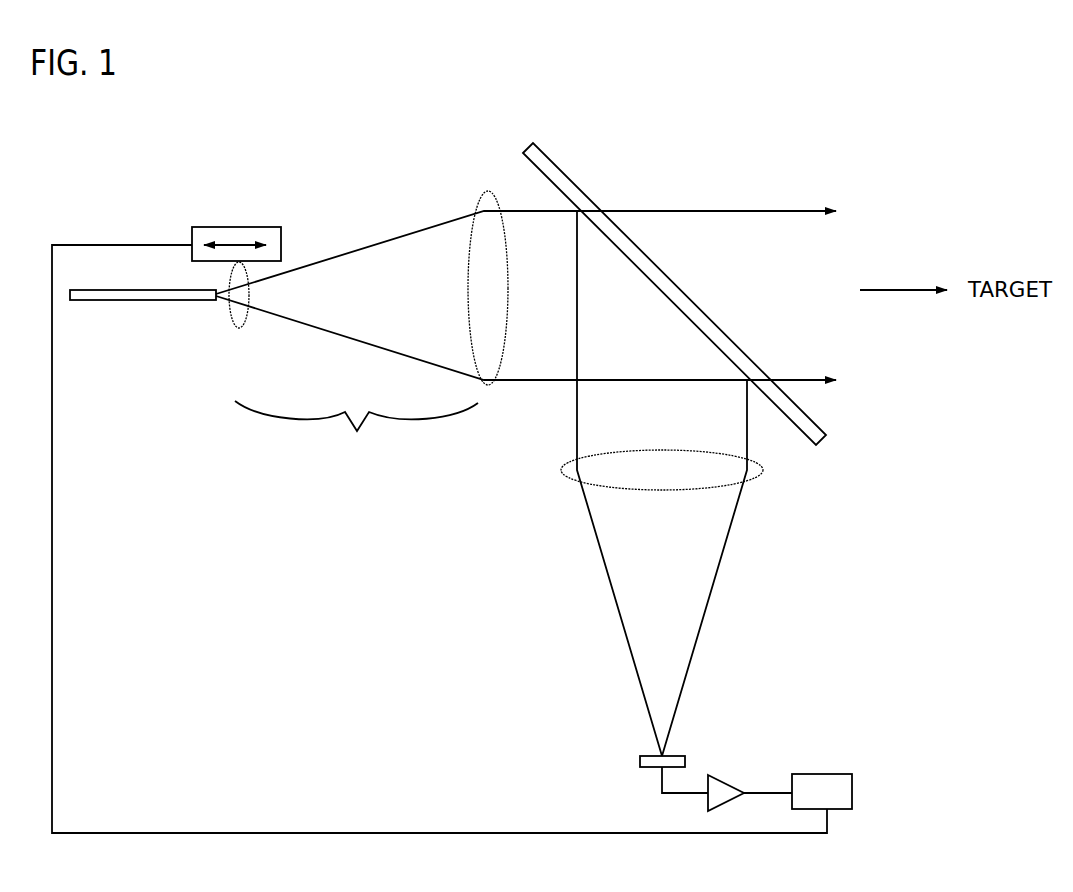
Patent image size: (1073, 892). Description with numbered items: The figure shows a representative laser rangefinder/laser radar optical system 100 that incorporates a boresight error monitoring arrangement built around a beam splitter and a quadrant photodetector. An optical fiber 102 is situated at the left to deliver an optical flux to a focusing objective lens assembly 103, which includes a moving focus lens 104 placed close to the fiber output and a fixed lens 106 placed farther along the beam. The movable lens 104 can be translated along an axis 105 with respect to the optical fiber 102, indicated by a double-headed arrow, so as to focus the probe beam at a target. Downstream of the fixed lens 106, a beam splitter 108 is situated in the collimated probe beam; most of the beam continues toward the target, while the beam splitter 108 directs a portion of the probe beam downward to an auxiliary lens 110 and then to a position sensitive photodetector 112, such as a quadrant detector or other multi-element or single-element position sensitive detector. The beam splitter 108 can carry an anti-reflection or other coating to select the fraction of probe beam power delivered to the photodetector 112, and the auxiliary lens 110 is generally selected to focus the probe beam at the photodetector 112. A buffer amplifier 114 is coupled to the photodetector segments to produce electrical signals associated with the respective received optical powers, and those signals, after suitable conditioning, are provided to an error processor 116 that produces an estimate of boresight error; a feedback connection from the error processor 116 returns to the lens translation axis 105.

The laser rangefinder/laser radar optical system 100 is at (872, 160).
The optical fiber 102 is at (165, 303).
The focusing objective lens assembly 103 is at (356, 431).
The moving focus lens 104 is at (232, 322).
The axis 105 is at (222, 240).
The fixed lens 106 is at (482, 205).
The beam splitter 108 is at (558, 165).
The auxiliary lens 110 is at (760, 473).
The position sensitive photodetector 112 is at (682, 753).
The buffer amplifier 114 is at (727, 782).
The error processor 116 is at (835, 772).